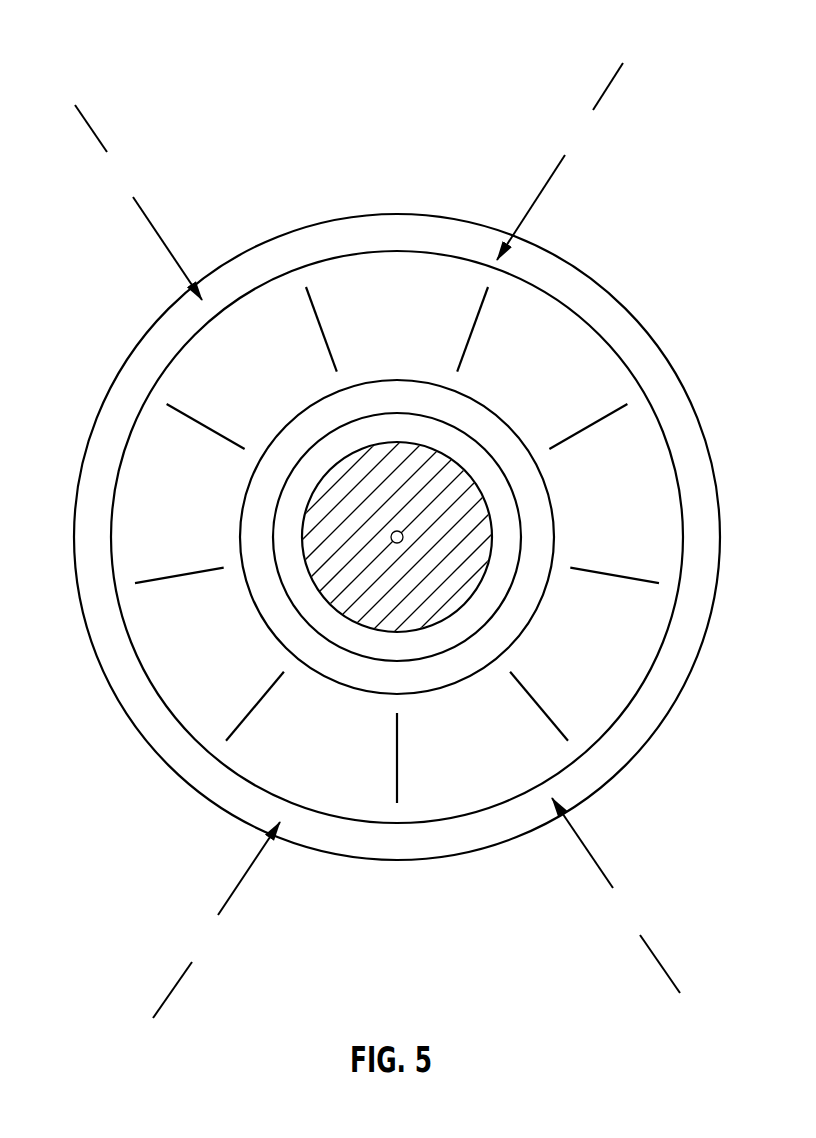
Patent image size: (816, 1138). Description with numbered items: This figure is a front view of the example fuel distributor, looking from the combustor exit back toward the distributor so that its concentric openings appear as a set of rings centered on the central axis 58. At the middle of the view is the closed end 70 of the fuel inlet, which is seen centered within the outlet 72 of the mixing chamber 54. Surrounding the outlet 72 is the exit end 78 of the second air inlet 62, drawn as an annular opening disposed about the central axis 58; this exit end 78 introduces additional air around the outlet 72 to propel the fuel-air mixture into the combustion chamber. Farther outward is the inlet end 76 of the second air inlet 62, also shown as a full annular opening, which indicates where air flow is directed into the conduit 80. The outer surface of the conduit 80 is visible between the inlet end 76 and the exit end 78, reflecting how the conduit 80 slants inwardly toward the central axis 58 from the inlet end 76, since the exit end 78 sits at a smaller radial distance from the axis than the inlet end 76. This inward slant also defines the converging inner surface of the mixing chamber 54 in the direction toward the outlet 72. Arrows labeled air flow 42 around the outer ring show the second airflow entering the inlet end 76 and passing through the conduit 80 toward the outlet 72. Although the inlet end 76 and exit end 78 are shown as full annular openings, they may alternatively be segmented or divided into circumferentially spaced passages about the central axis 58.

The air flow 42 is at (414, 540).
The second air inlet 62 is at (677, 80).
The inlet end 76 is at (137, 705).
The conduit 80 is at (578, 616).
The exit end 78 is at (304, 640).
The outlet 72 is at (296, 568).
The mixing chamber 54 is at (352, 640).
The closed end 70 is at (423, 600).
The central axis 58 is at (398, 527).